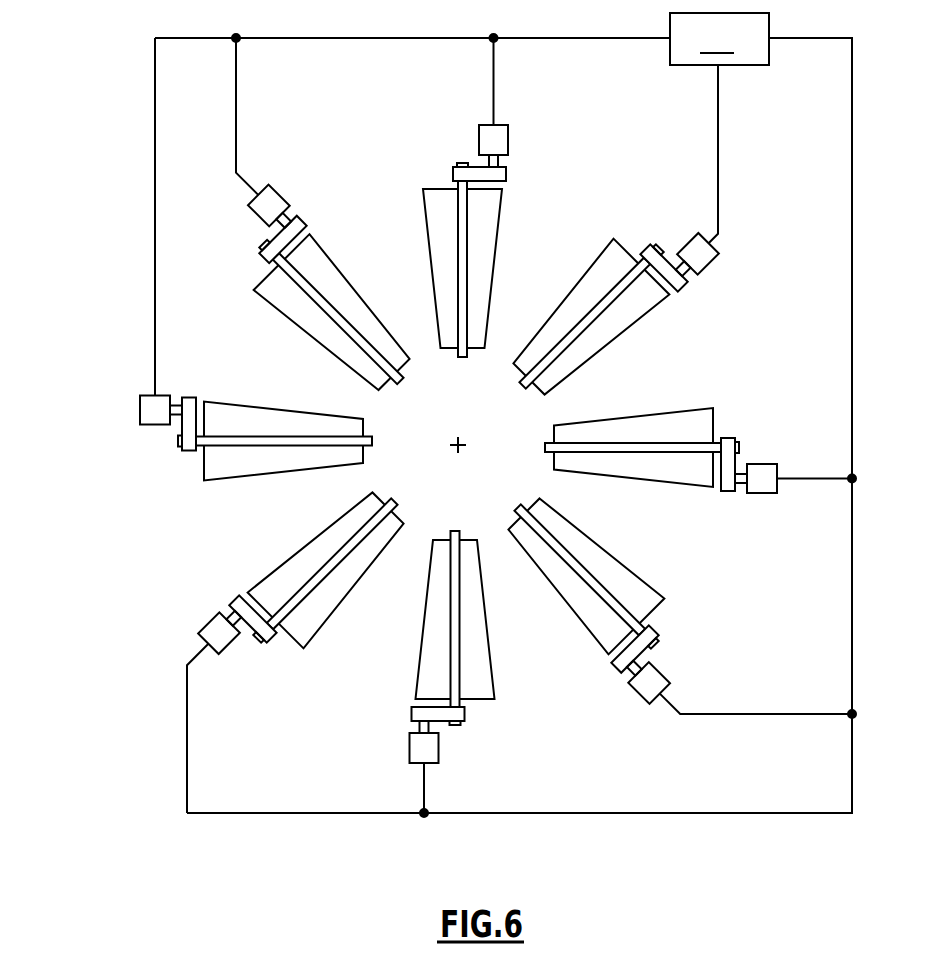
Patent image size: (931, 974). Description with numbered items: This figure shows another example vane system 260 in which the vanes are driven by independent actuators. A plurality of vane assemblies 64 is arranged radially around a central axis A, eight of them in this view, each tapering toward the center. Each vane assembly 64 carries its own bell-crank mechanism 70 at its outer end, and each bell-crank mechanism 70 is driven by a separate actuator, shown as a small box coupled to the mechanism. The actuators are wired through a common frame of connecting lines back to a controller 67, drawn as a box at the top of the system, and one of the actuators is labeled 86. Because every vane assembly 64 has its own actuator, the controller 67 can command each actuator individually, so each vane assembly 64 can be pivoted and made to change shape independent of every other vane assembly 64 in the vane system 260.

The vane system 260 is at (134, 105).
The controller 67 is at (719, 39).
The vane assembly 64 is at (655, 326).
The bell-crank mechanism 70 is at (506, 176).
The sensor 86 is at (163, 395).
The rotation axis A is at (461, 448).